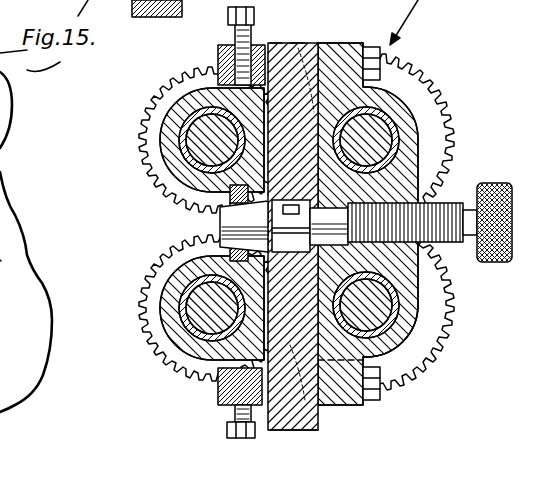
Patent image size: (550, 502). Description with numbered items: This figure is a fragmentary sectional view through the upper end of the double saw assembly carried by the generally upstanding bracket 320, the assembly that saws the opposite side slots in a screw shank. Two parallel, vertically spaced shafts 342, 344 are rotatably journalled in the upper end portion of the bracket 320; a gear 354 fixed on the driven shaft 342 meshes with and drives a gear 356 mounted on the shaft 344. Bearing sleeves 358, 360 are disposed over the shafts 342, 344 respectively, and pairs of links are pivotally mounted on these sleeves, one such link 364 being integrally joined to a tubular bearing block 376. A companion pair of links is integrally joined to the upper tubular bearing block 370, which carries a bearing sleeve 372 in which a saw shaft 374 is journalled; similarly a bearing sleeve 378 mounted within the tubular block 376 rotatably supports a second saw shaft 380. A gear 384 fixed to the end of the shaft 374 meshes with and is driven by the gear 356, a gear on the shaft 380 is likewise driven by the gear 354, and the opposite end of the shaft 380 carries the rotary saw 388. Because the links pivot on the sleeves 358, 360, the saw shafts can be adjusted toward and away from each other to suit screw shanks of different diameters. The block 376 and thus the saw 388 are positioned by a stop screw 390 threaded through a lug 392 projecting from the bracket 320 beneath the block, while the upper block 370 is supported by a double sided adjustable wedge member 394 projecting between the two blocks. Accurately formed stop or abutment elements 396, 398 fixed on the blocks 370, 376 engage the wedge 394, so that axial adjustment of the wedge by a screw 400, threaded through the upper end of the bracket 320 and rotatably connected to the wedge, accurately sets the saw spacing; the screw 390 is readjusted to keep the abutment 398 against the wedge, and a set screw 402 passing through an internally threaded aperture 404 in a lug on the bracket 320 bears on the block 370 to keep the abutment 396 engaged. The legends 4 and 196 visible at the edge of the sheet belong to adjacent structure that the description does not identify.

The machine frame 4 is at (7, 277).
The frame member 196 is at (26, 242).
The bracket 320 is at (318, 431).
The shaft 342 is at (403, 325).
The shaft 344 is at (398, 117).
The gear 354 is at (438, 290).
The gear 356 is at (442, 115).
The bearing sleeve 358 is at (395, 293).
The bearing sleeve 360 is at (382, 117).
The link 364 is at (320, 410).
The tubular bearing block 370 is at (173, 112).
The bearing sleeve 372 is at (180, 133).
The shaft 374 is at (200, 125).
The tubular bearing block 376 is at (167, 318).
The bearing sleeve 378 is at (182, 293).
The shaft 380 is at (200, 320).
The gear 384 is at (143, 138).
The saw 388 is at (190, 275).
The stop screw 390 is at (218, 383).
The lug 392 is at (215, 415).
The wedge member 394 is at (218, 225).
The abutment element 396 is at (232, 186).
The abutment element 398 is at (225, 258).
The screw 400 is at (448, 203).
The set screw 402 is at (277, 42).
The internally threaded aperture 404 is at (300, 43).